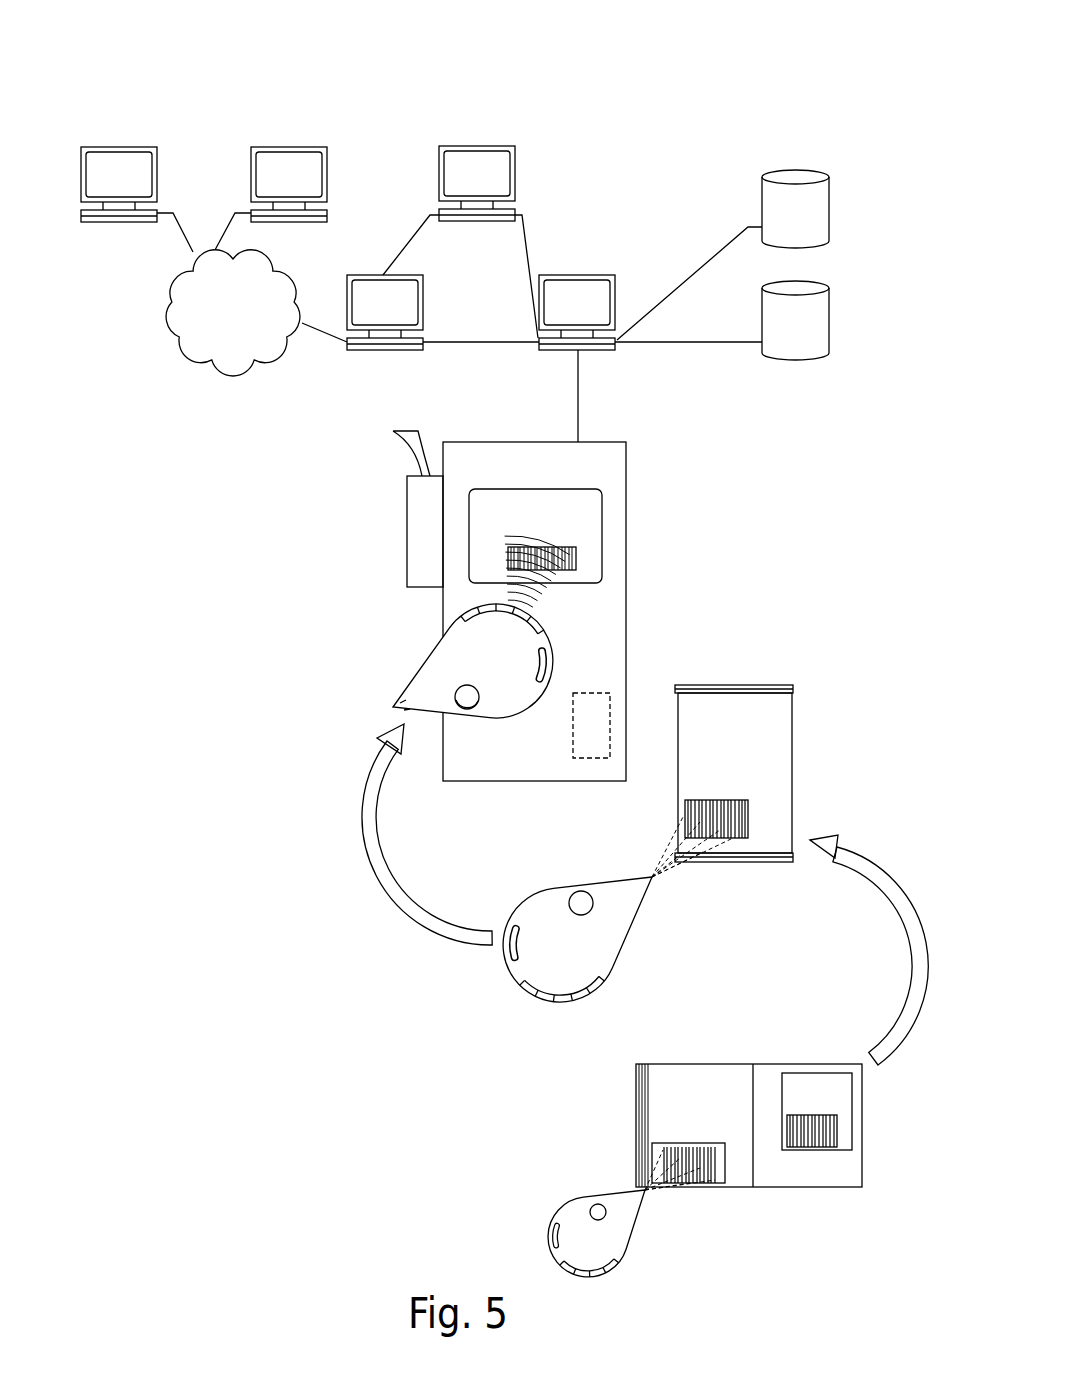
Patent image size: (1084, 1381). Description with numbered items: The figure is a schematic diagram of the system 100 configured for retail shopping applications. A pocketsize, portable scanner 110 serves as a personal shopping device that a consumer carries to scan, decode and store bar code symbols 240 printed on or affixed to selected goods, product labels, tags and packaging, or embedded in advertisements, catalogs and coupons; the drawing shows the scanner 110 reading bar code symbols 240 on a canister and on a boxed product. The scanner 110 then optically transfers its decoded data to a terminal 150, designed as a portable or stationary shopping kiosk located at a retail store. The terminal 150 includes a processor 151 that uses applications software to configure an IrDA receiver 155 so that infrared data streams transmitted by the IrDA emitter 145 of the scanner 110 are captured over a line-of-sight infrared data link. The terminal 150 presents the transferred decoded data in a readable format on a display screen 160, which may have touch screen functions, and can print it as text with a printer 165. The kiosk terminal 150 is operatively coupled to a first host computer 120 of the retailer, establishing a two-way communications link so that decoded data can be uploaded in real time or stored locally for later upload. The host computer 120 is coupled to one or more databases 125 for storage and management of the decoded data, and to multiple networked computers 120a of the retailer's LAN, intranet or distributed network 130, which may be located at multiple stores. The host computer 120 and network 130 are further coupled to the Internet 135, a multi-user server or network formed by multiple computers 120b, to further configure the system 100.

The system 100 is at (198, 80).
The scanner 110 is at (432, 650).
The first host computer 120 is at (587, 275).
The networked computers 120a is at (518, 128).
The multiple computers 120b is at (155, 126).
The databases 125 is at (810, 175).
The distributed network 130 is at (447, 338).
The Internet 135 is at (240, 367).
The IrDA emitter 145 is at (535, 613).
The terminal 150 is at (626, 460).
The terminal processor 151 is at (585, 702).
The IrDA receiver 155 is at (565, 545).
The display screen 160 is at (510, 498).
The printer 165 is at (407, 523).
The bar code symbols 240 is at (750, 813).